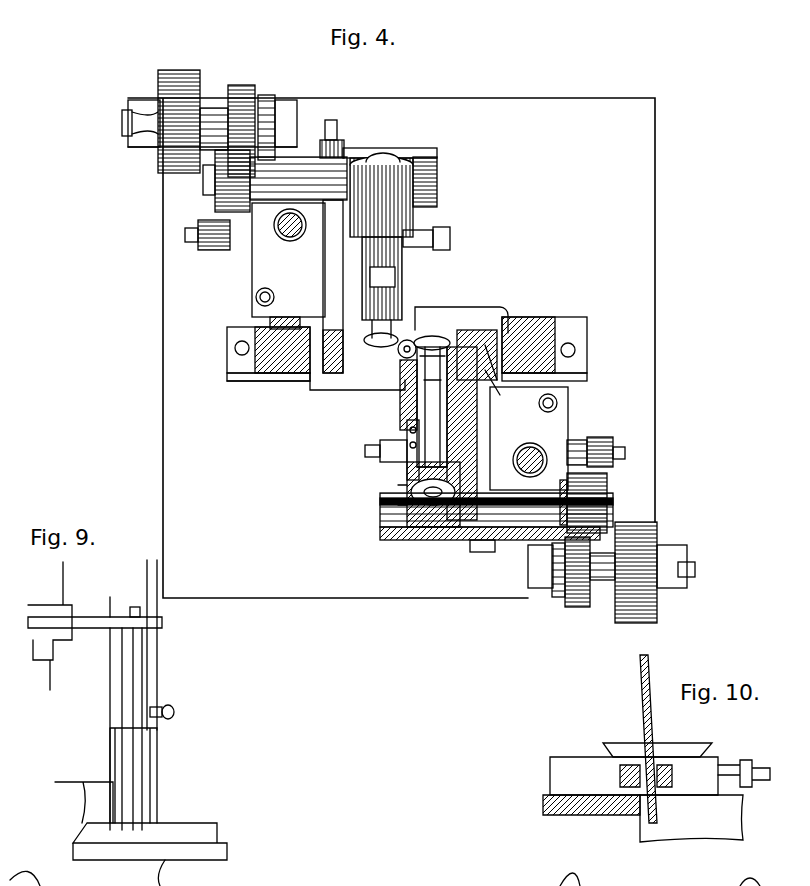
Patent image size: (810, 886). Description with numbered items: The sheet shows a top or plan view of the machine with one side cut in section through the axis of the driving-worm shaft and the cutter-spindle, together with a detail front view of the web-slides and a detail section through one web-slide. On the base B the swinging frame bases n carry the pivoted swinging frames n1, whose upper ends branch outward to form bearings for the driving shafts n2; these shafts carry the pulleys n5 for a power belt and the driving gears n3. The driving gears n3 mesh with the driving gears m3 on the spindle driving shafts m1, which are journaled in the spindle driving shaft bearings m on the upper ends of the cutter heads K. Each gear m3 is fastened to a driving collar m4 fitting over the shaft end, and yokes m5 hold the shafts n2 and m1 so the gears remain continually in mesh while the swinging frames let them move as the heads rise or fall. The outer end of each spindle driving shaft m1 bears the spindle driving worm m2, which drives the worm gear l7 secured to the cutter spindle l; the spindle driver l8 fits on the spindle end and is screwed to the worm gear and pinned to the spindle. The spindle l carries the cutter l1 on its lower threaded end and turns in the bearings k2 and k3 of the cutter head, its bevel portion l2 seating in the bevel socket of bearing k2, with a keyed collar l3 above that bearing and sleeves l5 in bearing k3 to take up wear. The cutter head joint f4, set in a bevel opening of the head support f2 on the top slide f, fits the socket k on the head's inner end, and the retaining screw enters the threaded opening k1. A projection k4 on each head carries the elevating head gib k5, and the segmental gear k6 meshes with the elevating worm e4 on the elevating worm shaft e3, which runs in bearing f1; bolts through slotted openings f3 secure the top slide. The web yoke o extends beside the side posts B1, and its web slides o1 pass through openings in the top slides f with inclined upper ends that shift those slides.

In FIG. 4, the swinging frame base n is at (128, 131).
In FIG. 4, the swinging frame n1 is at (685, 566).
In FIG. 4, the driving shaft n2 is at (212, 110).
In FIG. 4, the driving gear n3 is at (243, 88).
In FIG. 4, the pulley n5 is at (184, 77).
In FIG. 4, the spindle driving shaft bearing m is at (548, 543).
In FIG. 4, the spindle driving shaft m1 is at (458, 526).
In FIG. 4, the spindle driving worm m2 is at (425, 528).
In FIG. 4, the driving gear m3 is at (228, 210).
In FIG. 4, the driving collar m4 is at (600, 496).
In FIG. 4, the yoke m5 is at (264, 103).
In FIG. 4, the socket k is at (476, 330).
In FIG. 4, the screw threaded opening k1 is at (465, 433).
In FIG. 4, the cutter spindle bearing k2 is at (400, 392).
In FIG. 4, the cutter spindle bearing k3 is at (400, 438).
In FIG. 4, the projection k4 is at (330, 205).
In FIG. 4, the elevating head gib k5 is at (504, 385).
In FIG. 4, the segmental gear k6 is at (250, 258).
In FIG. 4, the cutter head K is at (356, 306).
In FIG. 4, the cutter spindle l is at (392, 276).
In FIG. 4, the cutter l1 is at (403, 334).
In FIG. 4, the bevel portion l2 is at (421, 350).
In FIG. 4, the collar l3 is at (403, 372).
In FIG. 4, the sleeve l5 is at (410, 470).
In FIG. 4, the worm gear l7 is at (400, 488).
In FIG. 4, the spindle driver l8 is at (392, 505).
In FIG. 4, the top slide f is at (410, 346).
In FIG. 4, the bearing f1 is at (408, 354).
In FIG. 4, the head support f2 is at (330, 272).
In FIG. 4, the slotted opening f3 is at (256, 294).
In FIG. 4, the cutter head joint f4 is at (494, 330).
In FIG. 4, the elevating worm shaft e3 is at (292, 247).
In FIG. 4, the elevating worm e4 is at (275, 228).
In FIG. 4, the base B is at (268, 410).
In FIG. 9, the base B is at (222, 853).
In FIG. 4, the side post B1 is at (272, 360).
In FIG. 9, the side post B1 is at (152, 768).
In FIG. 9, the web yoke o is at (95, 626).
In FIG. 9, the web slide o1 is at (138, 664).
In FIG. 10, the web slide o1 is at (680, 695).